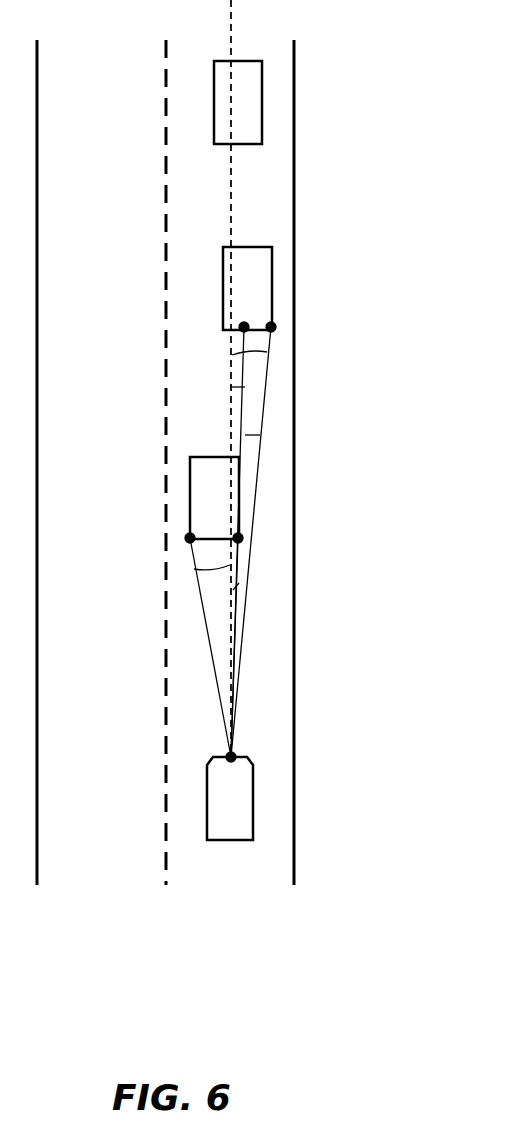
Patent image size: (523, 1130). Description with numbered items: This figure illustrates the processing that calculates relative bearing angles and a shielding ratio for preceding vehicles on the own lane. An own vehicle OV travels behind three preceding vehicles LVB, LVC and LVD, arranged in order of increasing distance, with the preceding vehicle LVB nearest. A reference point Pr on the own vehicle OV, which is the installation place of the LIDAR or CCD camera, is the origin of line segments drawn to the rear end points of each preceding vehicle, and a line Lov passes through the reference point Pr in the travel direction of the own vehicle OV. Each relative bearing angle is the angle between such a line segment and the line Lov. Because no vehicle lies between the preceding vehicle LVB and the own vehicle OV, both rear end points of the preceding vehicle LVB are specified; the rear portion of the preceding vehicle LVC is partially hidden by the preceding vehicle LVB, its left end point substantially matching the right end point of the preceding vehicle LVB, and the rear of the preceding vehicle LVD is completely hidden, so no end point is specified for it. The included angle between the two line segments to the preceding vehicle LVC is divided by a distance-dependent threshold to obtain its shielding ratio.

The preceding vehicle LVD is at (213, 102).
The preceding vehicle LVC is at (223, 288).
The preceding vehicle LVB is at (190, 490).
The own vehicle OV is at (238, 840).
The line Lov is at (230, 222).
The reference point Pr is at (235, 755).